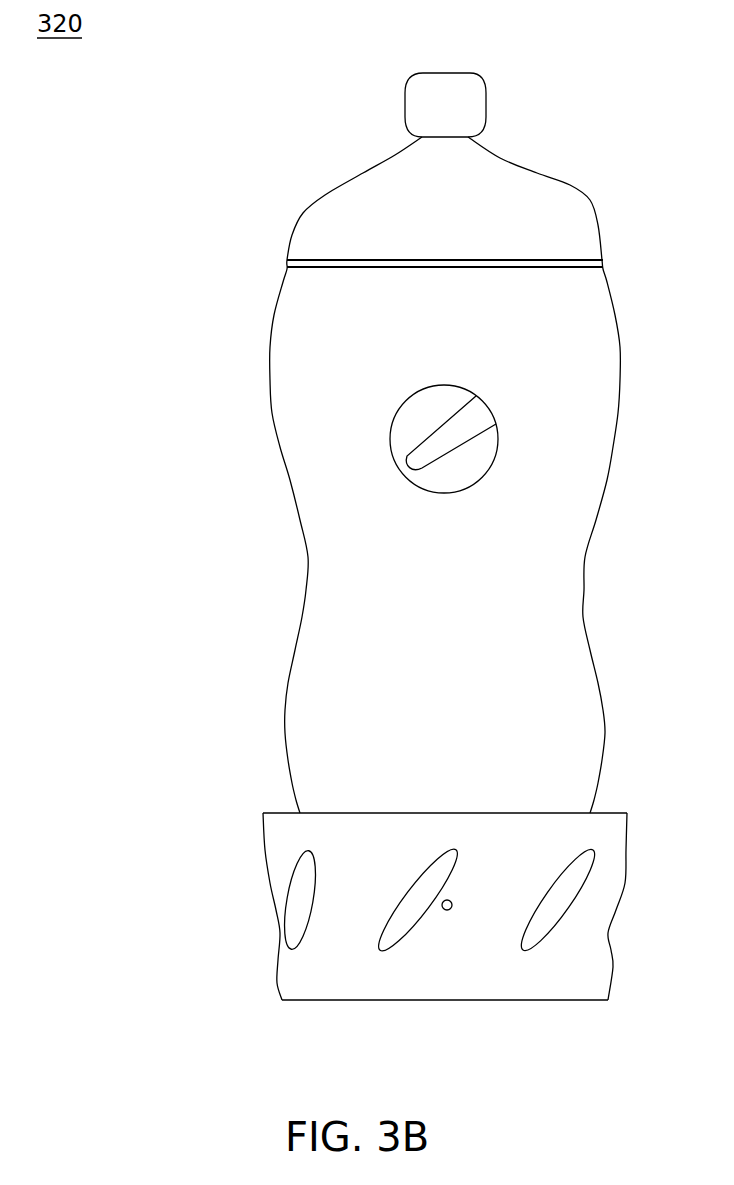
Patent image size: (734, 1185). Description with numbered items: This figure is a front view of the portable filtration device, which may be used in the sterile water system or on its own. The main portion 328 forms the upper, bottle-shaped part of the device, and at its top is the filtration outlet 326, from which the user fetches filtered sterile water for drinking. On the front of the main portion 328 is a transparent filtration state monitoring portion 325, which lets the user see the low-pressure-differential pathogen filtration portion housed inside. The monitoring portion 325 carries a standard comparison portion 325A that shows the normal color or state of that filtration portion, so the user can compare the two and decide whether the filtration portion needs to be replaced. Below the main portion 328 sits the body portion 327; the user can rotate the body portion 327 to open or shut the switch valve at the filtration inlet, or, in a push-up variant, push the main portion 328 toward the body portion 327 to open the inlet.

The filtration outlet 326 is at (486, 107).
The main portion 328 is at (270, 348).
The filtration state monitoring portion 325 is at (403, 397).
The standard comparison portion 325A is at (452, 448).
The body portion 327 is at (263, 838).